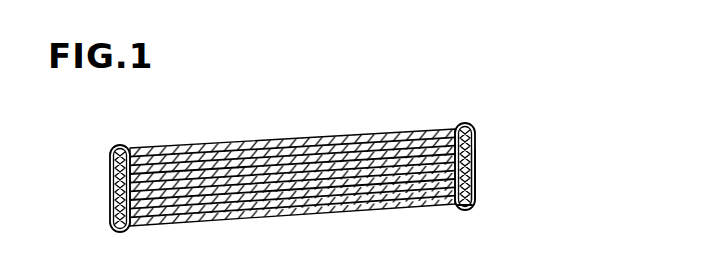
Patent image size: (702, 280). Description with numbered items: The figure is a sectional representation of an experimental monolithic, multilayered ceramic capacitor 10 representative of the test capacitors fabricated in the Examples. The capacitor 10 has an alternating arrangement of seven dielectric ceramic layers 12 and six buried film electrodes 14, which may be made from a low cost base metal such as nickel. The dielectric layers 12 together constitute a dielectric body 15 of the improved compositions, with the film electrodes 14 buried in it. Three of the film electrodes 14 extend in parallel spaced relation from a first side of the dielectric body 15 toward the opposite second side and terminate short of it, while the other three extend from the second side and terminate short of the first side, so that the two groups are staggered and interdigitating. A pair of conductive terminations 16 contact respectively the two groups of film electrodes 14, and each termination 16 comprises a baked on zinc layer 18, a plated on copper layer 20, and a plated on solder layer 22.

The monolithic ceramic capacitor 10 is at (476, 120).
The dielectric ceramic layers 12 is at (284, 190).
The film electrodes 14 is at (244, 156).
The dielectric body 15 is at (293, 138).
The conductive terminations 16 is at (110, 188).
The zinc layer 18 is at (461, 210).
The copper layer 20 is at (477, 190).
The solder layer 22 is at (476, 167).